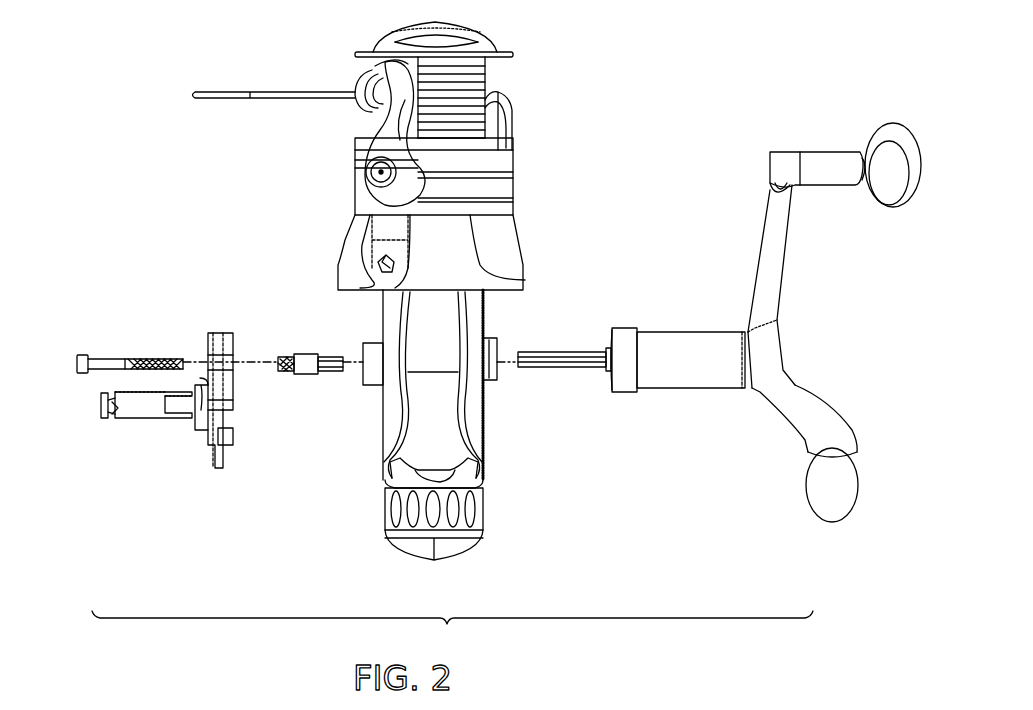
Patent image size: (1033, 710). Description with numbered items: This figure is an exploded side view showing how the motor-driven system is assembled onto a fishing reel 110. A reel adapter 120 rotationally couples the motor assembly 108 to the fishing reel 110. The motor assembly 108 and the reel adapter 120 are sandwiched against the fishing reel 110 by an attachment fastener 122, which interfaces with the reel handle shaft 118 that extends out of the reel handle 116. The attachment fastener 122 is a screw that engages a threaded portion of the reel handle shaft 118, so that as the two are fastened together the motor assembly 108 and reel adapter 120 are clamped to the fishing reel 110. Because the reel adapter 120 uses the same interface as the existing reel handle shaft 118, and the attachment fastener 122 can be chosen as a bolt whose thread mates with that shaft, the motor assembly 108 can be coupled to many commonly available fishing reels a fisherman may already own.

The motor assembly 108 is at (220, 330).
The fishing reel 110 is at (425, 422).
The reel handle 116 is at (690, 377).
The reel handle shaft 118 is at (551, 362).
The reel adapter 120 is at (307, 367).
The attachment fastener 122 is at (103, 367).